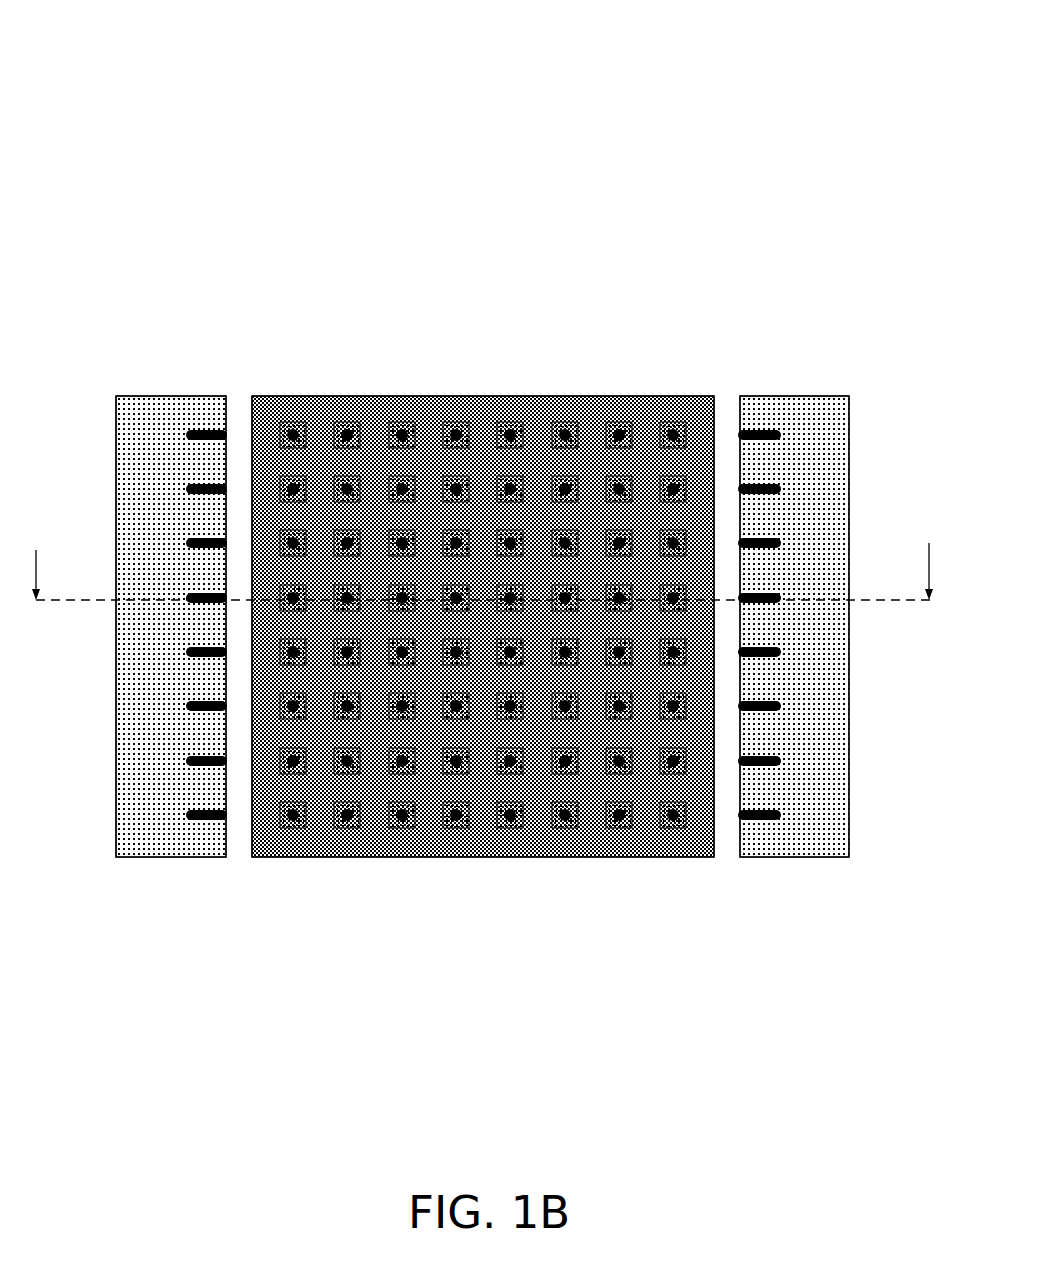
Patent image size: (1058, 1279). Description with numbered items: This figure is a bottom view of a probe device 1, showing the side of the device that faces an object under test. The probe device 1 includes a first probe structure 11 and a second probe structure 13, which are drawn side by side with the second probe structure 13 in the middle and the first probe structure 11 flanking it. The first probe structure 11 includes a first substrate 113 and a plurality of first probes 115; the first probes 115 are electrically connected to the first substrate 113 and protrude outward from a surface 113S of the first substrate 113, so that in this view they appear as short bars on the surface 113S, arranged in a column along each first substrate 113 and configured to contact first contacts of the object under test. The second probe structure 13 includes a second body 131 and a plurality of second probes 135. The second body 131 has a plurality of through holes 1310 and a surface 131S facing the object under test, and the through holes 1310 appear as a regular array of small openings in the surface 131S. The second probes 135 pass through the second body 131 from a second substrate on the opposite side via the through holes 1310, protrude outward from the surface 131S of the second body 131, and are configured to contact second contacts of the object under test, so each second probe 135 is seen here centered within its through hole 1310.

The probe device 1 is at (150, 98).
The first probe structure 11 is at (482, 635).
The second probe structure 13 is at (489, 362).
The second body 131 is at (573, 388).
The surface of the second body 131S is at (319, 842).
The through holes 1310 is at (483, 822).
The second probes 135 is at (508, 820).
The first substrate 113 is at (108, 795).
The surface of the first substrate 113S is at (134, 408).
The first probes 115 is at (196, 812).